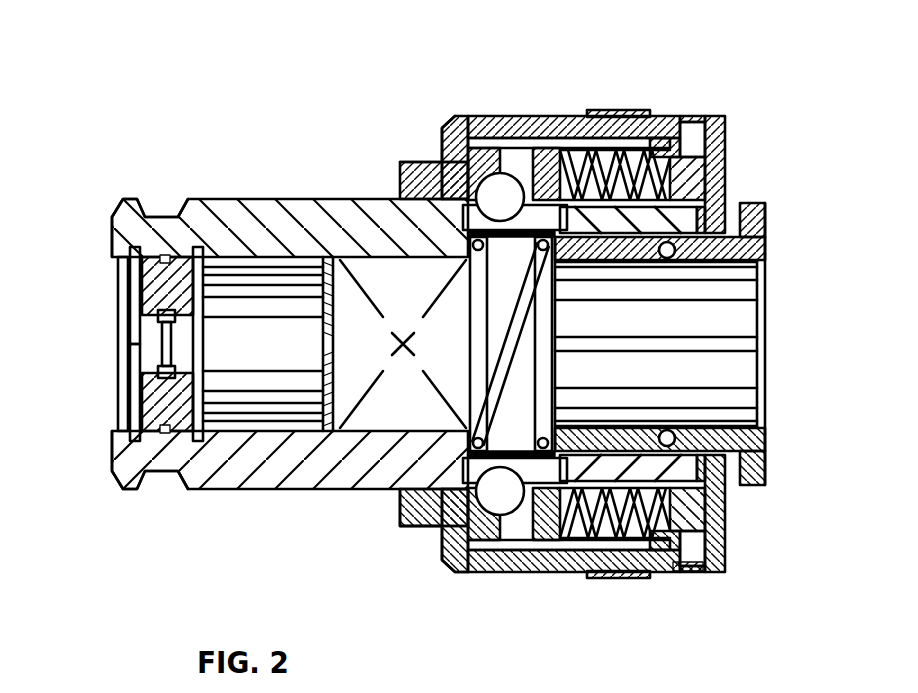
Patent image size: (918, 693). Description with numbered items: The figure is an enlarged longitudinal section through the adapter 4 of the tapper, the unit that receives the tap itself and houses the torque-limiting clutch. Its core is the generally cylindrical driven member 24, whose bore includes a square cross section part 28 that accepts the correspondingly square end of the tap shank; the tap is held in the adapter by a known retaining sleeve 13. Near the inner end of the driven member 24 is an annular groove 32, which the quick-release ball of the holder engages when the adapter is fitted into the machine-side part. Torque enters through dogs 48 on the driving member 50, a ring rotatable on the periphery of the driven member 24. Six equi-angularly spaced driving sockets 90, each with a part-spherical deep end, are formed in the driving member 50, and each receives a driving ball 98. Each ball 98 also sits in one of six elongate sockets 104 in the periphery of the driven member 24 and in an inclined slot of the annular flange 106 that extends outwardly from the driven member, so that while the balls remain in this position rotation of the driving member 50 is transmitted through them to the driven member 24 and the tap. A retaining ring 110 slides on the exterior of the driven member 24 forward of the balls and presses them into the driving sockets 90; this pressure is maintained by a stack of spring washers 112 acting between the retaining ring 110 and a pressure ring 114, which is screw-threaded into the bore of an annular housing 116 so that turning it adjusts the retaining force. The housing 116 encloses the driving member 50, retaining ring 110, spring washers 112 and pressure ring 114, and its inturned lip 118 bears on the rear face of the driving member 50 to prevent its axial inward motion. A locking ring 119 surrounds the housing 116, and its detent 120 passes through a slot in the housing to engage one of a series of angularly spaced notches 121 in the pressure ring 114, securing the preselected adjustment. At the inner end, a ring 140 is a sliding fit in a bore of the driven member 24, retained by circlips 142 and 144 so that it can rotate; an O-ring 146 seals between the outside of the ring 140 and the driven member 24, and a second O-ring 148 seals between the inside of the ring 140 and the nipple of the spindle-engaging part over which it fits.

The adapter 4 is at (417, 84).
The retaining sleeve 13 is at (767, 437).
The driven member 24 is at (240, 230).
The square cross section part 28 is at (352, 450).
The annular groove 32 is at (165, 220).
The dogs 48 is at (398, 175).
The driving member 50 is at (460, 118).
The driving socket 90 is at (441, 550).
The driving ball 98 is at (501, 195).
The elongate socket 104 is at (420, 163).
The annular flange 106 is at (522, 530).
The retaining ring 110 is at (560, 142).
The spring washers 112 is at (665, 135).
The pressure ring 114 is at (712, 178).
The annular housing 116 is at (540, 118).
The inturned lip 118 is at (436, 526).
The locking ring 119 is at (687, 574).
The detent 120 is at (690, 130).
The notches 121 is at (727, 143).
The ring 140 is at (160, 292).
The circlip 142 is at (133, 430).
The circlip 144 is at (210, 443).
The O-ring 146 is at (165, 428).
The second O-ring 148 is at (162, 377).